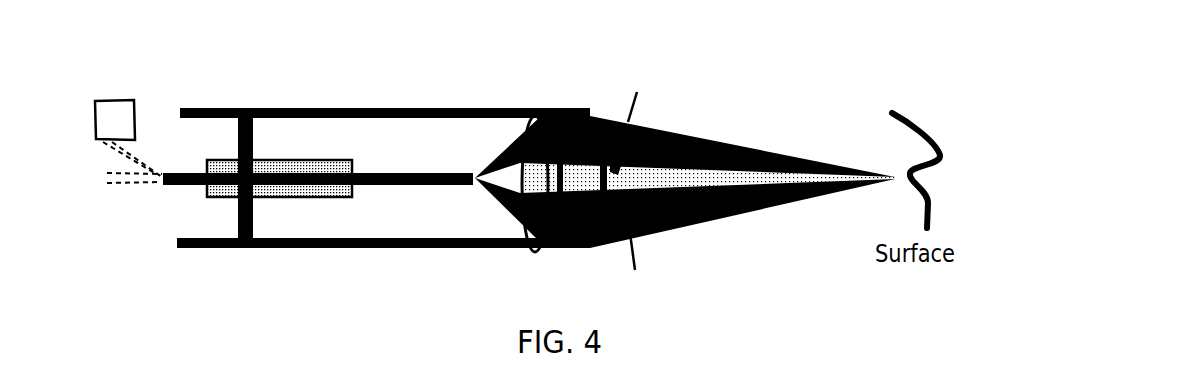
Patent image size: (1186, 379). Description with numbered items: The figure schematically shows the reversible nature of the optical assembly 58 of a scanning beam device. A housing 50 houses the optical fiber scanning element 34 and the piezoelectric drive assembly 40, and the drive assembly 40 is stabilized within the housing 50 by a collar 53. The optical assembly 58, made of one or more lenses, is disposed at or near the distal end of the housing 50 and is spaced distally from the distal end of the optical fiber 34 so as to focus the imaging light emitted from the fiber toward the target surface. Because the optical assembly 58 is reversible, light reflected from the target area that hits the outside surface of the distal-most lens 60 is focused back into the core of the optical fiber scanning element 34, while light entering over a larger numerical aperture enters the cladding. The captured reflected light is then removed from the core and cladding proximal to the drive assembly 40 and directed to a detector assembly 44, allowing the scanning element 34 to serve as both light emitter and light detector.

The optical fiber scanning element 34 is at (413, 186).
The piezoelectric drive assembly 40 is at (273, 160).
The detector assembly 44 is at (128, 141).
The housing 50 is at (372, 110).
The collar 53 is at (237, 232).
The optical assembly 58 is at (557, 245).
The distal-most lens 60 is at (593, 117).